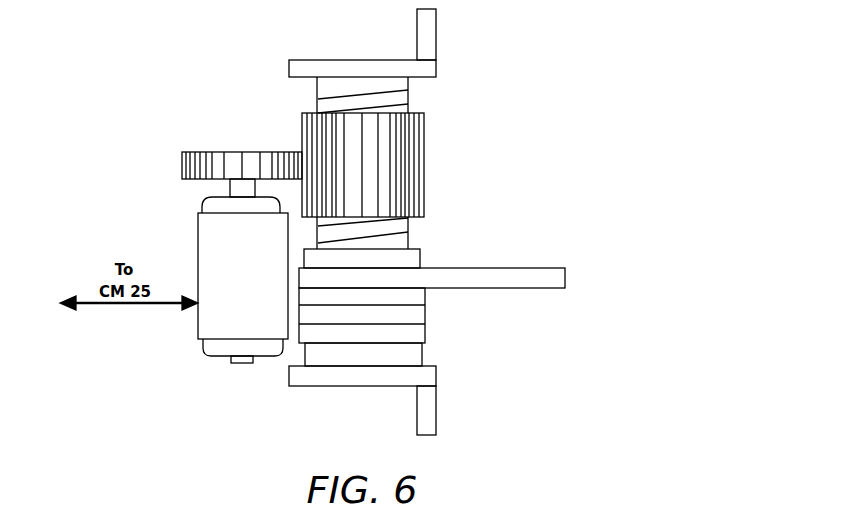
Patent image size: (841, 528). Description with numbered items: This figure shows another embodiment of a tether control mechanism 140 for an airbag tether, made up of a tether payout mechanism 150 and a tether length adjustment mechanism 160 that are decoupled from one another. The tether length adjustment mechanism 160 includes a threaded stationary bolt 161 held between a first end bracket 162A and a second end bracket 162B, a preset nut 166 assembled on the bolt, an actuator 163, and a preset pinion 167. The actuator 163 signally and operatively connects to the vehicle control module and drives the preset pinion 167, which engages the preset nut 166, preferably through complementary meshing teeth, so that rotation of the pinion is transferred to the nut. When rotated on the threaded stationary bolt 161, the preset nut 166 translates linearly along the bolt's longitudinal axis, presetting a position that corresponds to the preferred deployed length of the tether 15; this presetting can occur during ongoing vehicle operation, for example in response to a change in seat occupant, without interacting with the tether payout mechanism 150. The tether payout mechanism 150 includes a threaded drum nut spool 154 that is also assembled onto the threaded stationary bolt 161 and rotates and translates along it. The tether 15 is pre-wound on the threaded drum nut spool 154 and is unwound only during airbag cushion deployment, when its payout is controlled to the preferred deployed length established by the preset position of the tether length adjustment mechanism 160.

The tether 15 is at (477, 288).
The tether control mechanism 140 is at (329, 230).
The tether payout mechanism 150 is at (375, 390).
The threaded drum nut spool 154 is at (420, 262).
The tether length adjustment mechanism 160 is at (212, 362).
The threaded stationary bolt 161 is at (408, 105).
The first end bracket 162A is at (436, 45).
The second end bracket 162B is at (436, 380).
The actuator 163 is at (198, 258).
The preset nut 166 is at (424, 175).
The preset pinion 167 is at (222, 152).